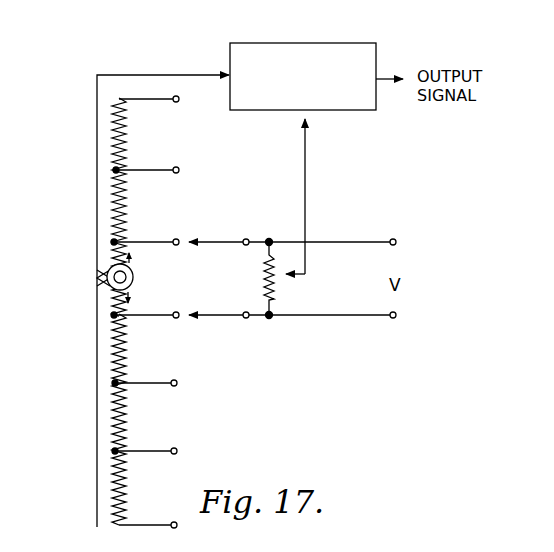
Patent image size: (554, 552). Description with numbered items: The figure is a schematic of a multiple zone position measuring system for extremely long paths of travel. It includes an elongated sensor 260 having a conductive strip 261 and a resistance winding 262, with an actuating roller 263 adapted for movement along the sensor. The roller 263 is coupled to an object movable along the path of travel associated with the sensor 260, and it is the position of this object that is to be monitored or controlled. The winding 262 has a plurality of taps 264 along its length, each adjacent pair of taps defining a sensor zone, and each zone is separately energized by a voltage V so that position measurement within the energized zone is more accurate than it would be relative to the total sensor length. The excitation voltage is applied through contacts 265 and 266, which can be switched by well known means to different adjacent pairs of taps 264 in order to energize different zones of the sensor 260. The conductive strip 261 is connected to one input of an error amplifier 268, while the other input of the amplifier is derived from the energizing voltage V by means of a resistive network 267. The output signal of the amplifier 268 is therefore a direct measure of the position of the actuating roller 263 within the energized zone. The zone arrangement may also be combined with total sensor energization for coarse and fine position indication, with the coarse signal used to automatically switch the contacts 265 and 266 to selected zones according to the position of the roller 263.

The elongated sensor 260 is at (86, 283).
The conductive strip 261 is at (97, 157).
The resistance winding 262 is at (125, 484).
The actuating roller 263 is at (134, 274).
The taps 264 is at (178, 381).
The contact 265 is at (208, 240).
The contact 266 is at (221, 313).
The resistive network 267 is at (275, 286).
The error amplifier 268 is at (337, 42).